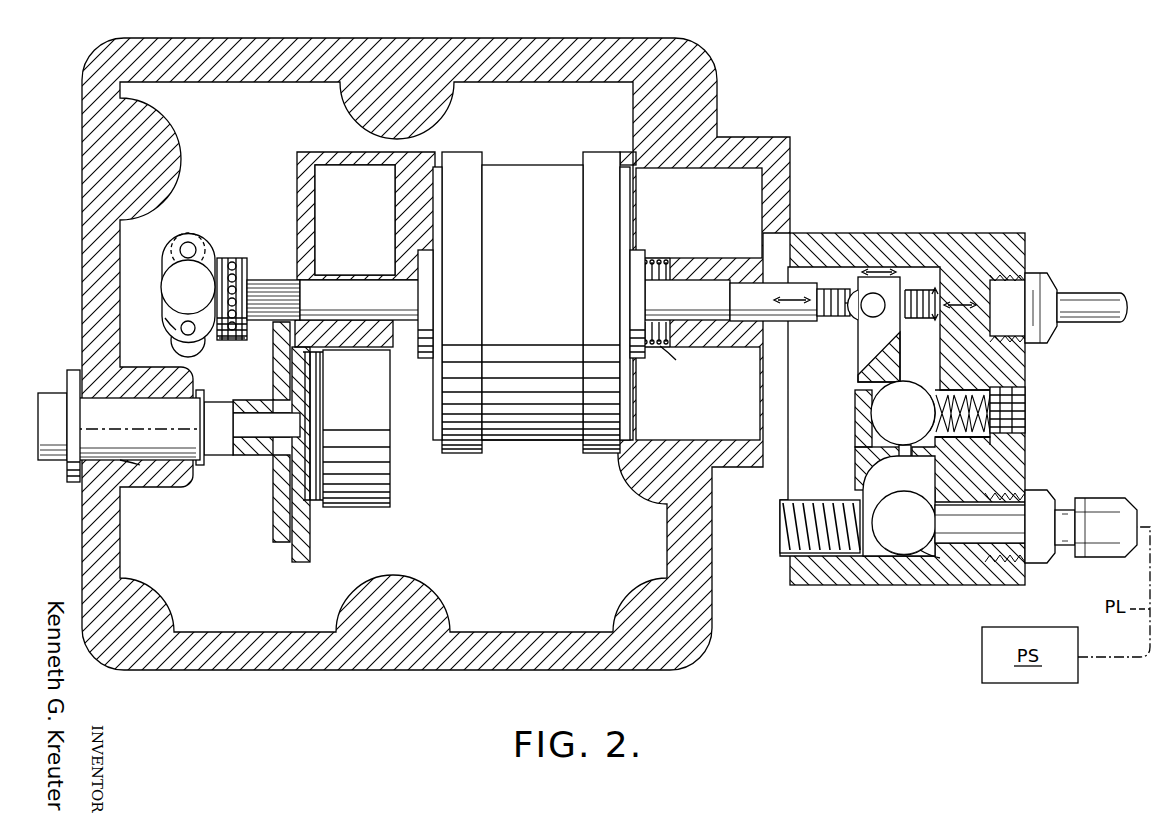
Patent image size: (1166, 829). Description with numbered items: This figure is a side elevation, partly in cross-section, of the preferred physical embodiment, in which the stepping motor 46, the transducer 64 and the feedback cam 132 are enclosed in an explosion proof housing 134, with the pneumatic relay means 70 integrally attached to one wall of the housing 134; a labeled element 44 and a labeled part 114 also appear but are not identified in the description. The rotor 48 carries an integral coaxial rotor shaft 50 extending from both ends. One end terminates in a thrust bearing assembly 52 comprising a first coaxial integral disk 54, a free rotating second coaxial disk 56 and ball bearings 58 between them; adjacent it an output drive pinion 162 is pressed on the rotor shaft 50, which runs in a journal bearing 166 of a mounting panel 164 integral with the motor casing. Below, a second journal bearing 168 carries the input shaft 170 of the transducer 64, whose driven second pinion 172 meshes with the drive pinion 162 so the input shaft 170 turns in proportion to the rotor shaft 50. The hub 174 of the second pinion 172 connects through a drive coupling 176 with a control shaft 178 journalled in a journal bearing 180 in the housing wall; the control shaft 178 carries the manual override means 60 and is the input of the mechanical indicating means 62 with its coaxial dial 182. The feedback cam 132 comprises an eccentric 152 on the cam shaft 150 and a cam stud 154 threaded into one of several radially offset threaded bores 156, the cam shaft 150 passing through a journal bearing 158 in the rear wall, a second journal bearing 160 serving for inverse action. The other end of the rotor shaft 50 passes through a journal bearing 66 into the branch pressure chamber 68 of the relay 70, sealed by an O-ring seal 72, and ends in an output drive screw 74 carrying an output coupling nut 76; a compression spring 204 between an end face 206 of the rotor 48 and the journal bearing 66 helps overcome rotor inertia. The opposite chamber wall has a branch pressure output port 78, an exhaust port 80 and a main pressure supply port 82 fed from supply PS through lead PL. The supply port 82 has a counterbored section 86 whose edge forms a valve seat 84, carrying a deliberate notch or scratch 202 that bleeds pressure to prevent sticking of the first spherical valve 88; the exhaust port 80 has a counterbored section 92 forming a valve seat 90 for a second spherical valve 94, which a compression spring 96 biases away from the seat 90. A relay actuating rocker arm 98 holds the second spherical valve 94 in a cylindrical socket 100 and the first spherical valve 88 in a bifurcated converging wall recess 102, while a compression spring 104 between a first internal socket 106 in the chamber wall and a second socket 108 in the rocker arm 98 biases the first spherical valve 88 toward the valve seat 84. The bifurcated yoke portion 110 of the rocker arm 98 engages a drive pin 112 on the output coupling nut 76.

The rotor 44 is at (510, 165).
The stepping motor 46 is at (519, 271).
The rotor 48 is at (425, 262).
The rotor shaft 50 is at (352, 308).
The thrust bearing assembly 52 is at (240, 262).
The first coaxial integral disk 54 is at (247, 266).
The second coaxial disk 56 is at (227, 258).
The ball bearings 58 is at (232, 340).
The manual override means 60 is at (52, 462).
The mechanical indicating means 62 is at (72, 372).
The transducer 64 is at (340, 429).
The journal bearing 66 is at (706, 262).
The branch pressure chamber 68 is at (808, 387).
The pneumatic relay means 70 is at (846, 586).
The peripheral O-ring seal 72 is at (773, 302).
The output drive screw 74 is at (826, 288).
The output coupling nut 76 is at (858, 290).
The branch pressure output port 78 is at (1035, 296).
The exhaust port 80 is at (1012, 412).
The main pressure supply port 82 is at (1036, 506).
The valve seat 84 is at (930, 556).
The counterbored section 86 is at (960, 488).
The first spherical valve 88 is at (893, 523).
The valve seat 90 is at (935, 386).
The counterbored section 92 is at (976, 396).
The second spherical valve 94 is at (891, 413).
The compression spring 96 is at (982, 456).
The relay actuating rocker arm 98 is at (861, 339).
The cylindrical socket 100 is at (858, 428).
The bifurcated converging wall recess 102 is at (870, 493).
The compression spring 104 is at (828, 512).
The first internal socket 106 is at (796, 528).
The second socket 108 is at (904, 541).
The bifurcated yoke portion 110 is at (890, 290).
The drive pin 112 is at (852, 318).
The pipe 114 is at (1090, 293).
The feedback cam 132 is at (163, 256).
The explosion proof housing 134 is at (428, 38).
The cam shaft 150 is at (190, 243).
The eccentric 152 is at (166, 328).
The cam stud 154 is at (172, 296).
The threaded bores 156 is at (182, 331).
The journal bearing 158 is at (170, 244).
The second journal bearing 160 is at (192, 350).
The output drive pinion 162 is at (262, 280).
The mounting panel 164 is at (366, 166).
The journal bearing 166 is at (366, 276).
The second journal bearing 168 is at (276, 476).
The input shaft 170 is at (266, 434).
The driven second pinion 172 is at (292, 514).
The hub 174 is at (262, 452).
The drive coupling 176 is at (213, 456).
The control shaft 178 is at (135, 424).
The journal bearing 180 is at (138, 464).
The coaxial dial 182 is at (73, 482).
The notch or scratch 202 is at (656, 262).
The compression spring 204 is at (648, 348).
The end face 206 is at (672, 352).